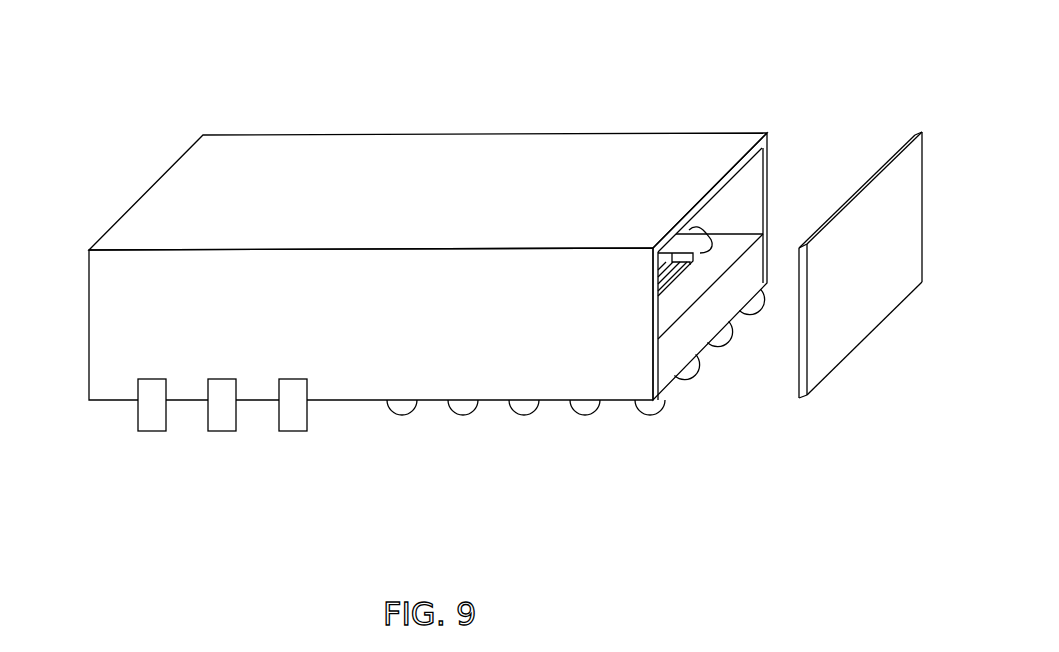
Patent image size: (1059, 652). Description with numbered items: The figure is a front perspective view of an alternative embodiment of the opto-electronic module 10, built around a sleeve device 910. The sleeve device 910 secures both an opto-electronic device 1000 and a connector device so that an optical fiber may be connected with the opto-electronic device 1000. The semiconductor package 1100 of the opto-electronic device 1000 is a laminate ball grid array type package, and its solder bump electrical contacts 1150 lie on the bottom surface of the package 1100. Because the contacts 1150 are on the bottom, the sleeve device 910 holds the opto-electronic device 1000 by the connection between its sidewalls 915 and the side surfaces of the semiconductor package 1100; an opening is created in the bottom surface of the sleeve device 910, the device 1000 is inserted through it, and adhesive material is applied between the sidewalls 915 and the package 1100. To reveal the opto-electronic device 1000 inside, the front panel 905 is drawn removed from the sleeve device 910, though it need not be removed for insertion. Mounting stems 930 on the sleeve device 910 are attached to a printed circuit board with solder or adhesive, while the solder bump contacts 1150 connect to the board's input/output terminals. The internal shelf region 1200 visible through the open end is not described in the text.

The electronic device / module 10 is at (494, 272).
The front panel 905 is at (908, 136).
The sleeve device 910 is at (573, 133).
The sidewalls 915 is at (100, 300).
The mounting stems 930 is at (153, 433).
The opto-electronic device 1000 is at (703, 332).
The semiconductor package 1100 is at (668, 383).
The solder bump electrical contacts 1150 is at (647, 413).
The internal circuit board shelf 1200 is at (712, 232).